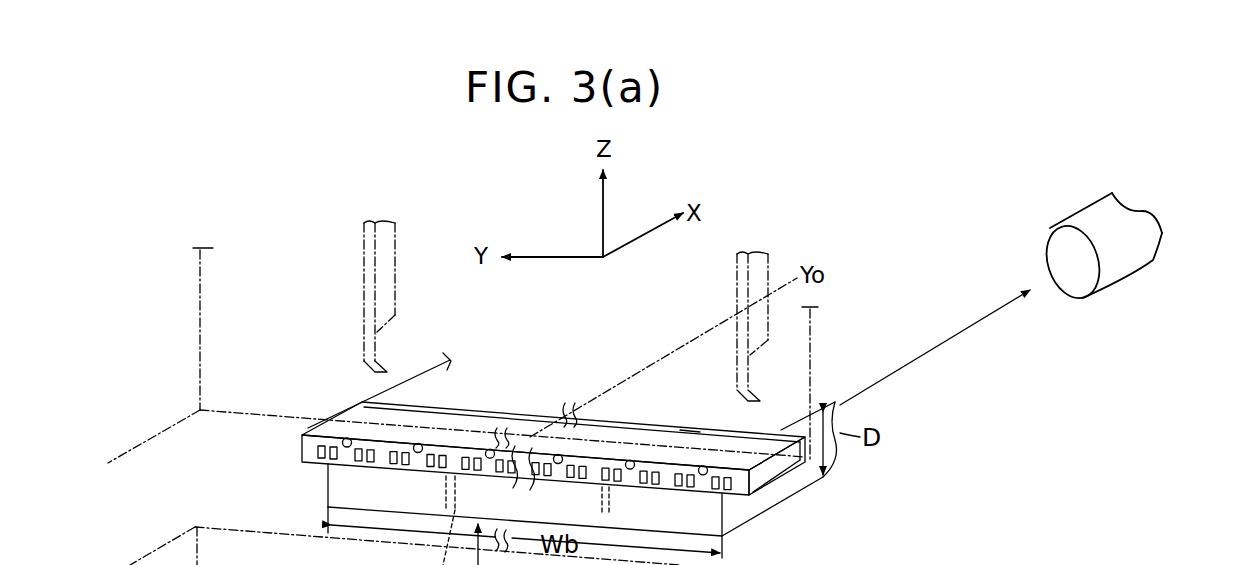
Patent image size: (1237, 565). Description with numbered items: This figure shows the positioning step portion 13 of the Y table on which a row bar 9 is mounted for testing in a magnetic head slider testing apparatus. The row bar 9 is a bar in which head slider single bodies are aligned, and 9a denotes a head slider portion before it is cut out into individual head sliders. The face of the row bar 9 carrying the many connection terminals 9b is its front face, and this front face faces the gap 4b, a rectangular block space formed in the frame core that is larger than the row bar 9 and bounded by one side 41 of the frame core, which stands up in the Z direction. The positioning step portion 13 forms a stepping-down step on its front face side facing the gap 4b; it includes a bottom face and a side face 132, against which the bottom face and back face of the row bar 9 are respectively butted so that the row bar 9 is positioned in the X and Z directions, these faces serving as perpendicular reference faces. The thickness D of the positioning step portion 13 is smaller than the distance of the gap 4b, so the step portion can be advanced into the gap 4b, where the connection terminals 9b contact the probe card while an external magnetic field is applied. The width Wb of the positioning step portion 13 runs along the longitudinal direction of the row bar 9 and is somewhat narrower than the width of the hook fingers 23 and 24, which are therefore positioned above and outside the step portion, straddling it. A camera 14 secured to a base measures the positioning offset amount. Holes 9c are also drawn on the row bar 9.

The row bar 9 is at (757, 440).
The head slider portion 9a is at (343, 456).
The connection terminals 9b is at (356, 564).
The positioning holes 9c is at (347, 437).
The positioning step portion 13 is at (480, 400).
The side face 132 is at (690, 425).
The camera 14 is at (1122, 268).
The hook finger 23 is at (735, 275).
The hook finger 24 is at (362, 243).
The one side of the frame core 41 is at (840, 400).
The gap 4b is at (213, 478).